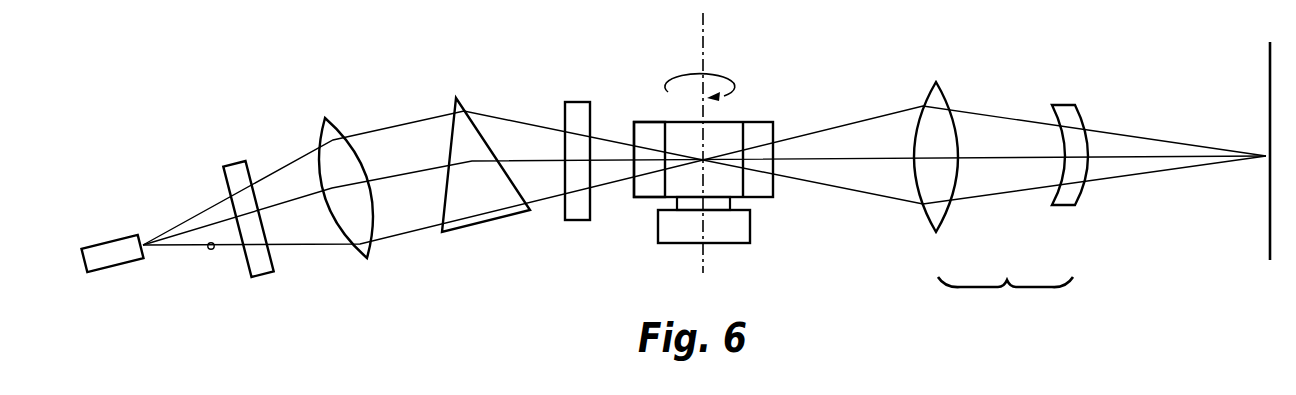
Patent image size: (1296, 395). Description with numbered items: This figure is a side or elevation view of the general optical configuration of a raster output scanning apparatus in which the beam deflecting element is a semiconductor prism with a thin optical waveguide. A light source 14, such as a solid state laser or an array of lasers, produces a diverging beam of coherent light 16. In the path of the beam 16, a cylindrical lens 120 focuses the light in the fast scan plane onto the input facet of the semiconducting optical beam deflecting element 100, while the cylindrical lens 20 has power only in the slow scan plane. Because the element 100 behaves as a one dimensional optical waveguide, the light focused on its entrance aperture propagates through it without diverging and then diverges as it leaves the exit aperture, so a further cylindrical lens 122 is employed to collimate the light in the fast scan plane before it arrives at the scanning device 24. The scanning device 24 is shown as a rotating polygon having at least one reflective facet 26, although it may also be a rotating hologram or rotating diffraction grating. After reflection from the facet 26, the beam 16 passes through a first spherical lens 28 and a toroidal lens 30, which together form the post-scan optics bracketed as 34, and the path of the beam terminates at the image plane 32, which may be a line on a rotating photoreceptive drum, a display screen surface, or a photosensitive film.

The light source 14 is at (117, 253).
The beam of coherent light 16 is at (211, 250).
The cylindrical lens 120 is at (235, 163).
The cylindrical lens 20 is at (325, 120).
The semiconducting optical beam deflecting element 100 is at (458, 102).
The cylindrical lens 122 is at (577, 222).
The scanning device 24 is at (653, 198).
The reflective facet 26 is at (730, 138).
The first spherical lens 28 is at (938, 232).
The toroidal lens 30 is at (1062, 207).
The image plane 32 is at (1268, 190).
The imaging optics assembly 34 is at (1005, 295).